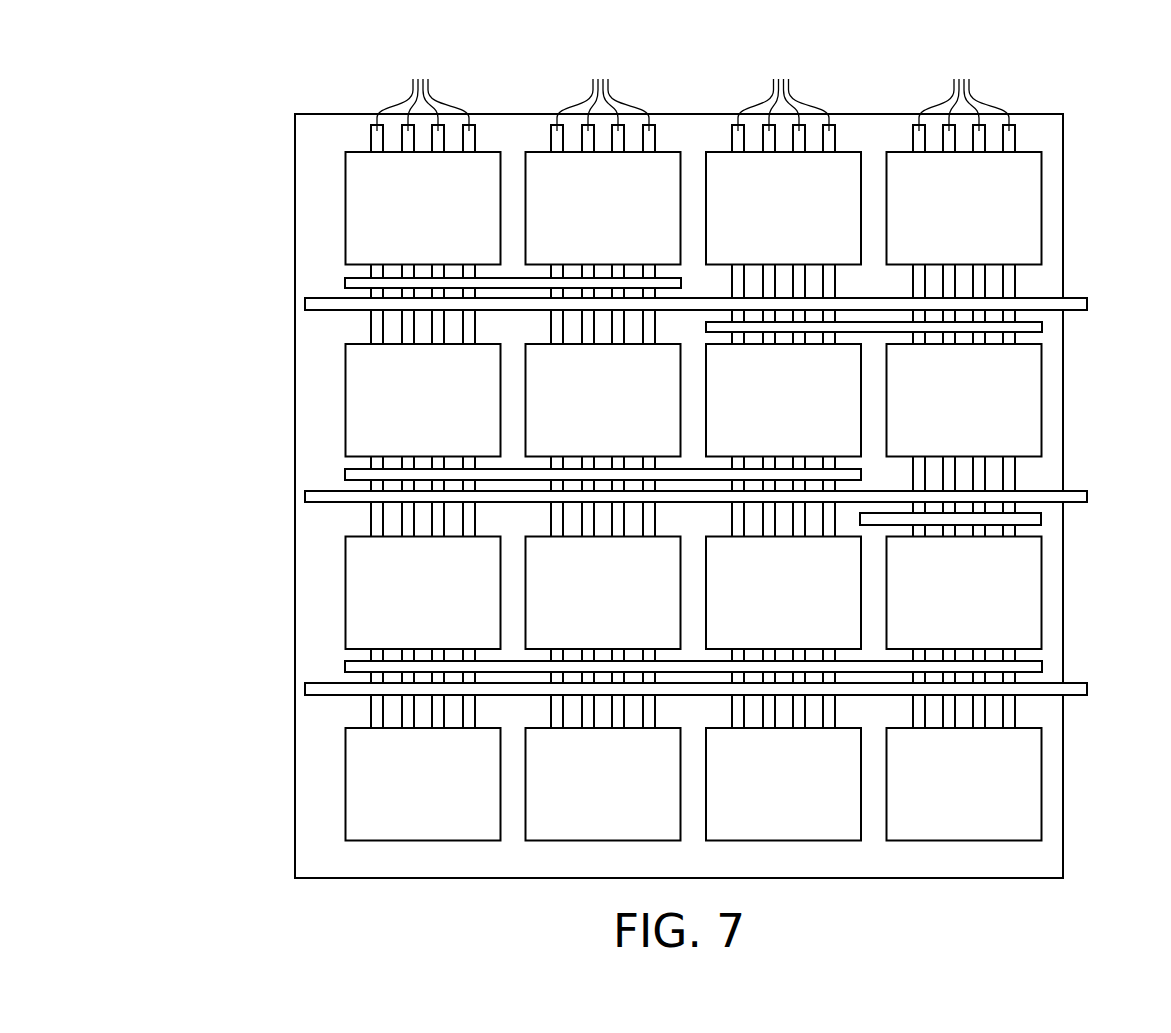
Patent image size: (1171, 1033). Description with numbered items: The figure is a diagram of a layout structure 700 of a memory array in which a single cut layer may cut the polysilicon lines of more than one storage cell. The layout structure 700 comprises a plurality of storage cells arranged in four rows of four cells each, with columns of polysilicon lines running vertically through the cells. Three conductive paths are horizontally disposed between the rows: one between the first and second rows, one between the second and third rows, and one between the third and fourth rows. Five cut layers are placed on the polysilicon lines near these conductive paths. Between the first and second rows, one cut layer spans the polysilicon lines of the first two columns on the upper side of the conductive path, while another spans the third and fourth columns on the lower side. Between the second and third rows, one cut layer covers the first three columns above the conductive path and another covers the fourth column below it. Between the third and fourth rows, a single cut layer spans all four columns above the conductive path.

The layout structure 700 is at (197, 73).